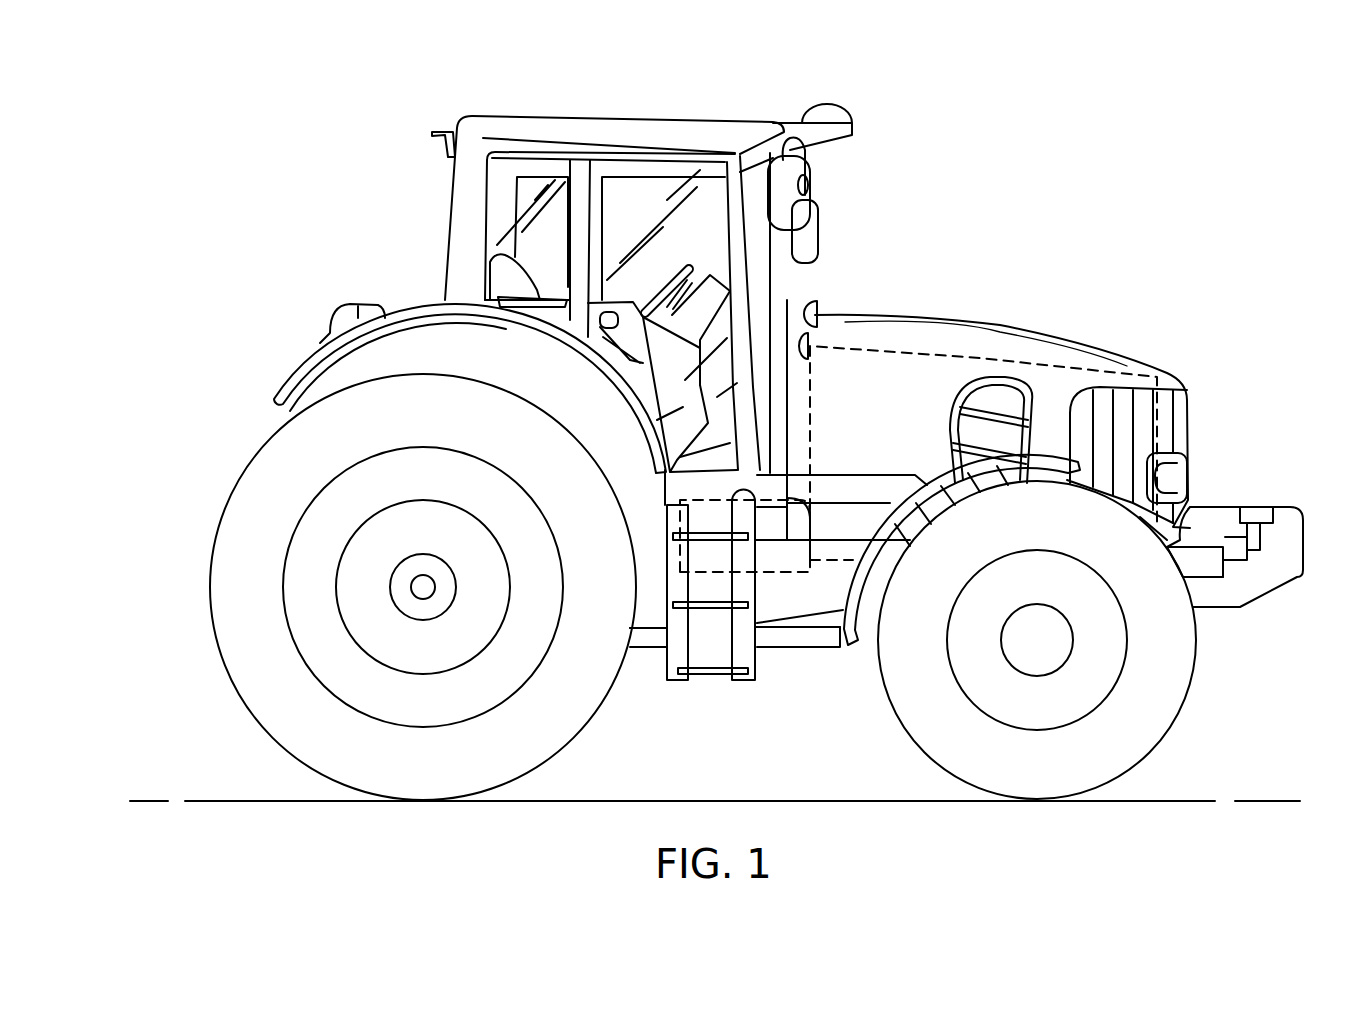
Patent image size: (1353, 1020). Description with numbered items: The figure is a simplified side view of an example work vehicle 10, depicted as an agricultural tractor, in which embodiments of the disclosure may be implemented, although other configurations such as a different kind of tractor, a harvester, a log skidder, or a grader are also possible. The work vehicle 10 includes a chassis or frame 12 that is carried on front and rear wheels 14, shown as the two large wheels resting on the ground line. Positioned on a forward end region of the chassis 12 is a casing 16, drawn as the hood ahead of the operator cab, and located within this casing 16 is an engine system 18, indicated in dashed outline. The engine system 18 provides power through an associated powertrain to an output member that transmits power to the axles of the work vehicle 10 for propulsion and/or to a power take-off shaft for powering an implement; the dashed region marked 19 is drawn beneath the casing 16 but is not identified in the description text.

The work vehicle (tractor) 10 is at (716, 452).
The chassis 12 is at (651, 657).
The wheels 14 is at (423, 587).
The hood 16 is at (1088, 342).
The engine 18 is at (980, 358).
The transmission 19 is at (803, 582).